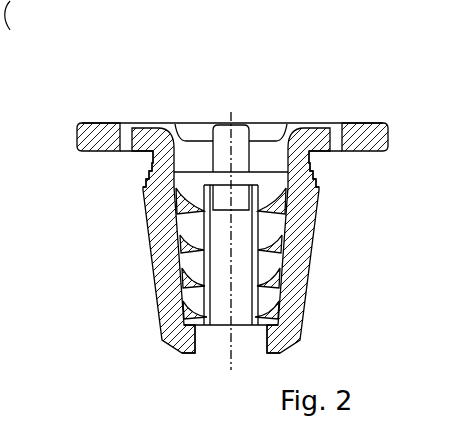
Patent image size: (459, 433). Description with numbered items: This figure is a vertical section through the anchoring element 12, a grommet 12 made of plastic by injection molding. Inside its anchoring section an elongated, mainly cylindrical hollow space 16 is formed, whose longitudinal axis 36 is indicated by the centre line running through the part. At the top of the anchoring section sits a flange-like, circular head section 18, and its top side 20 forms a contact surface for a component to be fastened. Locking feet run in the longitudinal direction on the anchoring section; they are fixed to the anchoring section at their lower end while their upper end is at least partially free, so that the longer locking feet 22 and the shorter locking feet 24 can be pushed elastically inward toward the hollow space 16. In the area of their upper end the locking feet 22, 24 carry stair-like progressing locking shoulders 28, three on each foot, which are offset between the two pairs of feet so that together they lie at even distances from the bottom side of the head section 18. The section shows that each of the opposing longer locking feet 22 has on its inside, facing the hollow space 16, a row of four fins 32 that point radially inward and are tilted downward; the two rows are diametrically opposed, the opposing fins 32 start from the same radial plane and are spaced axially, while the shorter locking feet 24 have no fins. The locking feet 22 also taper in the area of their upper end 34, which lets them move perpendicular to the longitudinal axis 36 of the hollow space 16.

The anchoring element 12 is at (363, 80).
The hollow space 16 is at (213, 348).
The head section 18 is at (77, 139).
The top side 20 is at (107, 122).
The locking feet 22 is at (172, 268).
The locking feet 24 is at (253, 195).
The locking shoulders 28 is at (150, 168).
The fins 32 is at (263, 245).
The upper end 34 is at (173, 147).
The longitudinal axis 36 is at (233, 343).